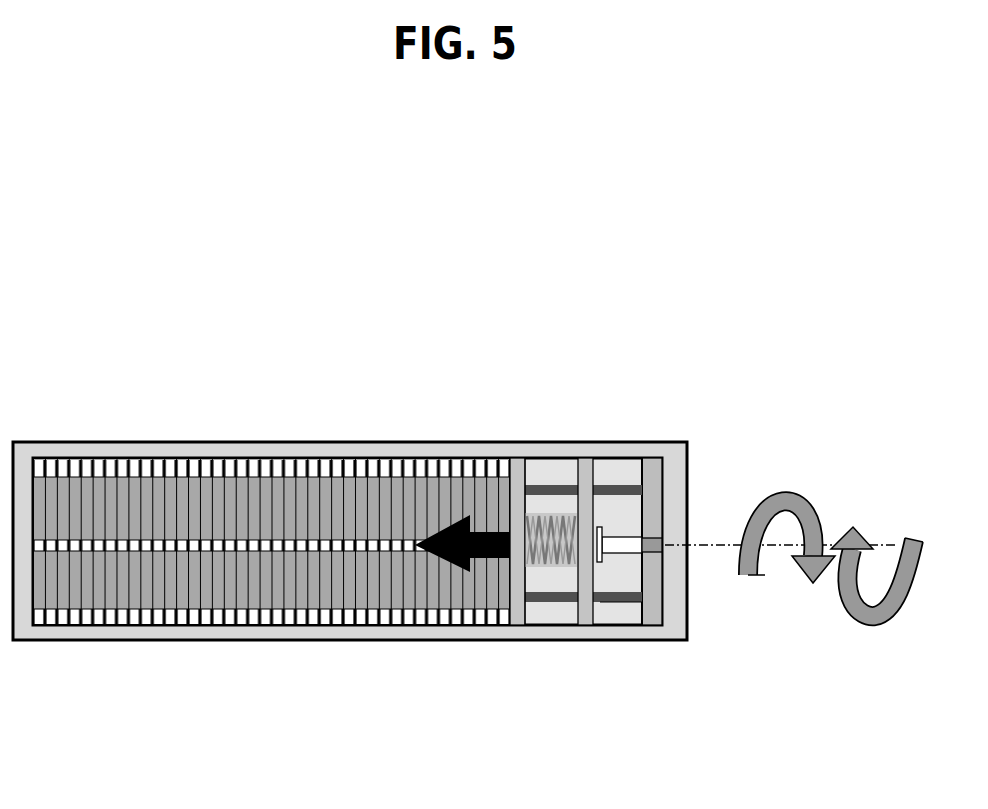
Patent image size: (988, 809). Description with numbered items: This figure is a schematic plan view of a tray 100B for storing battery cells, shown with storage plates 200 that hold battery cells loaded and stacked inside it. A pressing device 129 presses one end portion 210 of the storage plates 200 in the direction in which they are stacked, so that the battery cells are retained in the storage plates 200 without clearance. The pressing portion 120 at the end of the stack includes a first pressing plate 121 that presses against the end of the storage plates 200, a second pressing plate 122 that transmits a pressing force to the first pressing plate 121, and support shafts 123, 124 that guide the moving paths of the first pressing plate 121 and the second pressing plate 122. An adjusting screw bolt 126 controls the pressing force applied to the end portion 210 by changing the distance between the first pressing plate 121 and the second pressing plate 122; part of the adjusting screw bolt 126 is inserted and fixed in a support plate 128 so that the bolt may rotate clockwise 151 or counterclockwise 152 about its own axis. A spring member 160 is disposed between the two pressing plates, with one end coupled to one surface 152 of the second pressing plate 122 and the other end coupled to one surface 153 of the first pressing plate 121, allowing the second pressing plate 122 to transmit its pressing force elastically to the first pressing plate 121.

The tray for storing battery cells 100B is at (154, 331).
The storage plates 200 is at (140, 592).
The one end portion of the storage plates 210 is at (512, 612).
The pressing portion 120 is at (519, 444).
The first pressing plate 121 is at (522, 472).
The second pressing plate 122 is at (593, 472).
The support shaft 123 is at (623, 603).
The support shaft 124 is at (627, 481).
The adjusting screw bolt 126 is at (654, 545).
The support plate 128 is at (643, 609).
The pressing device 129 is at (645, 461).
The clockwise rotation 151 is at (782, 493).
The counterclockwise rotation / one surface of the second pressing plate 152 is at (913, 530).
The one surface of the first pressing plate 153 is at (525, 527).
The spring member 160 is at (543, 567).